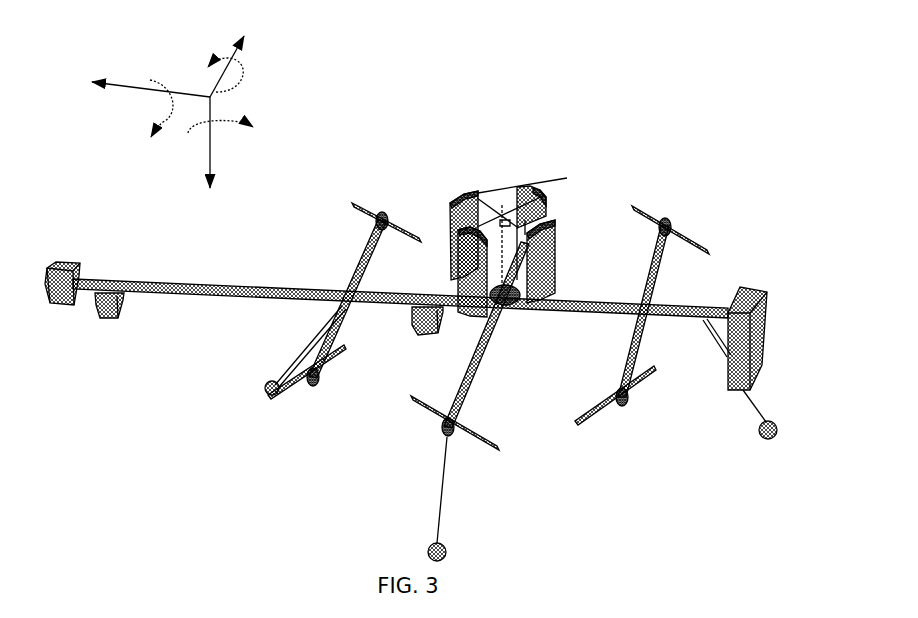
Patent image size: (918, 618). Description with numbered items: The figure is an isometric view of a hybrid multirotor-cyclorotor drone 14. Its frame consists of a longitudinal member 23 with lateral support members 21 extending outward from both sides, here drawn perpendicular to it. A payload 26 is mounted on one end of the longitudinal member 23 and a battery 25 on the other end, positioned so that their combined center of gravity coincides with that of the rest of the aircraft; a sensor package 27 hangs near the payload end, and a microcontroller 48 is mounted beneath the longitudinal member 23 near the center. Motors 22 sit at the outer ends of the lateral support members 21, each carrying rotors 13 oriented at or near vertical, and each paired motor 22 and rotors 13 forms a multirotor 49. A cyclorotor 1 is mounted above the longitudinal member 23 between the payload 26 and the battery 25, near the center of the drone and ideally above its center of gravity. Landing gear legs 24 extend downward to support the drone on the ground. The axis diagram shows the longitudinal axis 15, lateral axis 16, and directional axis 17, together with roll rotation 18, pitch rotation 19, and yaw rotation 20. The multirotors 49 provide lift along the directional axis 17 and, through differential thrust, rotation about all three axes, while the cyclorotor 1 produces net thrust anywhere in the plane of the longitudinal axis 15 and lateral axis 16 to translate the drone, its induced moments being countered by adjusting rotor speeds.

The cyclorotor 1 is at (482, 203).
The rotors 13 is at (407, 228).
The hybrid multirotor-cyclorotor drone 14 is at (718, 152).
The longitudinal axis 15 is at (138, 85).
The lateral axis 16 is at (235, 57).
The directional axis 17 is at (210, 155).
The roll rotation 18 is at (161, 96).
The pitch rotation 19 is at (238, 75).
The yaw rotation 20 is at (235, 126).
The lateral support members 21 is at (358, 270).
The motors 22 is at (383, 212).
The longitudinal member 23 is at (245, 289).
The landing gear legs 24 is at (445, 508).
The battery 25 is at (748, 291).
The payload 26 is at (71, 262).
The sensor package 27 is at (118, 314).
The microcontroller 48 is at (412, 322).
The multirotor 49 is at (372, 197).